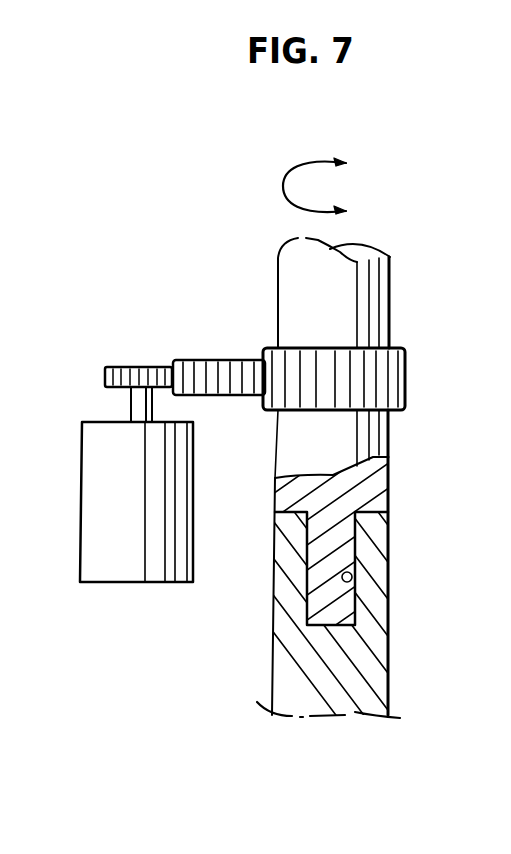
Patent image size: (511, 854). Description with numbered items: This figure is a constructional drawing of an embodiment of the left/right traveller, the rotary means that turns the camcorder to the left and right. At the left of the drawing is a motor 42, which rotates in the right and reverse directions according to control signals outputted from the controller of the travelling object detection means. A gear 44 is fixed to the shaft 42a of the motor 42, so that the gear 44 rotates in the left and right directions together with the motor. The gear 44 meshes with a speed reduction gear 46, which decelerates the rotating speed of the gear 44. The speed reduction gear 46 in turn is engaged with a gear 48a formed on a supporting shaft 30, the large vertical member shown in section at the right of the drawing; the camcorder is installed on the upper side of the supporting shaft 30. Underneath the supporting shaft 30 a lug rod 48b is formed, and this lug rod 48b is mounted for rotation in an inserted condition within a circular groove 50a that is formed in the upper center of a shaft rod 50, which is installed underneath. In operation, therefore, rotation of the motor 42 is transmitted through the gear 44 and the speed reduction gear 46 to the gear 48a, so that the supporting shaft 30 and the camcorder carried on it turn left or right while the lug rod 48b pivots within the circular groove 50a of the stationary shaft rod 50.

The supporting shaft 30 is at (456, 293).
The motor 42 is at (118, 565).
The shaft 42a is at (131, 396).
The gear 44 is at (139, 367).
The speed reduction gear 46 is at (225, 360).
The gear 48a is at (457, 378).
The lug rod 48b is at (437, 537).
The shaft rod 50 is at (432, 651).
The circular groove 50a is at (432, 587).